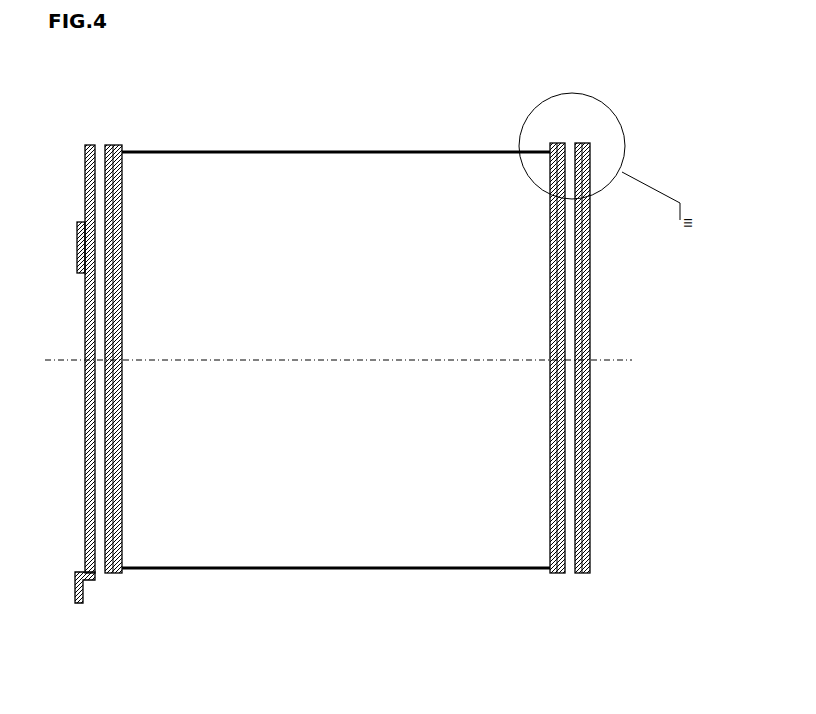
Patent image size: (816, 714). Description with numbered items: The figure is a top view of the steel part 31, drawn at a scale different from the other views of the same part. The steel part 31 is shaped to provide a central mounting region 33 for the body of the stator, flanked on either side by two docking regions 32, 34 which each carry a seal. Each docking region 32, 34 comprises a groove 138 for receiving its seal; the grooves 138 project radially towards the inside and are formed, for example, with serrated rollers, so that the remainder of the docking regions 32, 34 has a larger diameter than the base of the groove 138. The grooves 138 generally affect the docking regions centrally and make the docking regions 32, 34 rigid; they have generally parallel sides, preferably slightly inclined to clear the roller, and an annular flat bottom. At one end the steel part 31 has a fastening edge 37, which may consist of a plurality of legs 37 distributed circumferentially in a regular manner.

The steel part 31 is at (381, 147).
The docking region 32 is at (120, 580).
The mounting region 33 is at (331, 571).
The docking region 34 is at (553, 574).
The fastening edge 37 is at (87, 597).
The groove 138 is at (102, 146).